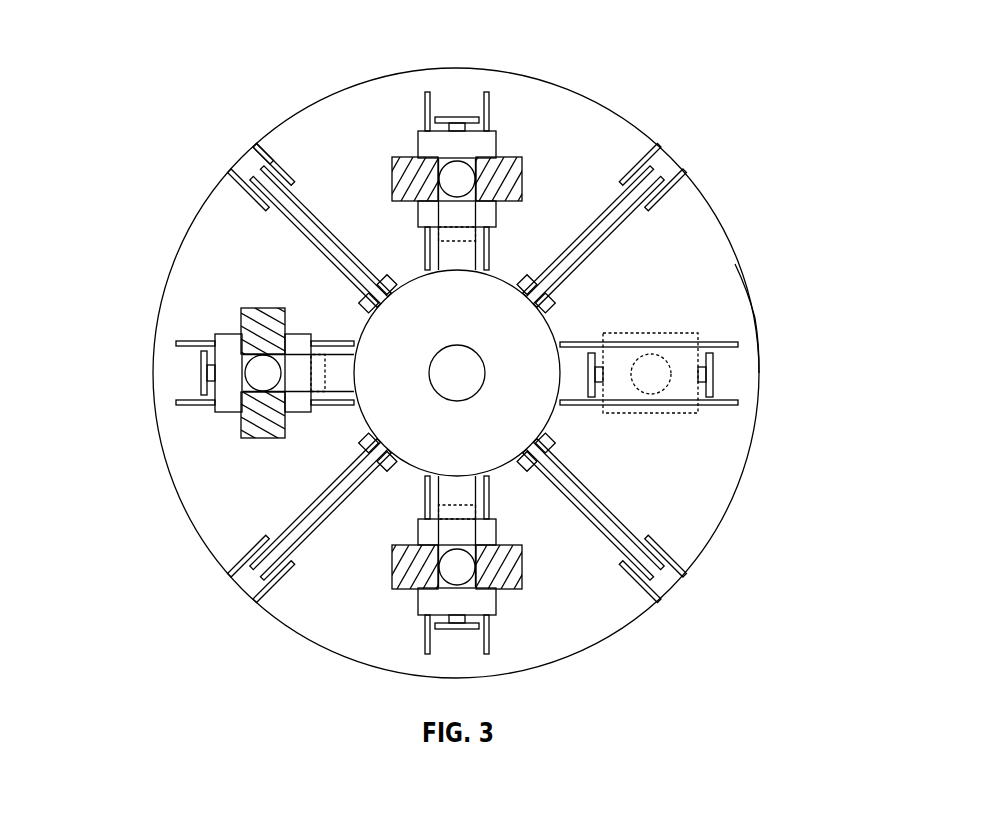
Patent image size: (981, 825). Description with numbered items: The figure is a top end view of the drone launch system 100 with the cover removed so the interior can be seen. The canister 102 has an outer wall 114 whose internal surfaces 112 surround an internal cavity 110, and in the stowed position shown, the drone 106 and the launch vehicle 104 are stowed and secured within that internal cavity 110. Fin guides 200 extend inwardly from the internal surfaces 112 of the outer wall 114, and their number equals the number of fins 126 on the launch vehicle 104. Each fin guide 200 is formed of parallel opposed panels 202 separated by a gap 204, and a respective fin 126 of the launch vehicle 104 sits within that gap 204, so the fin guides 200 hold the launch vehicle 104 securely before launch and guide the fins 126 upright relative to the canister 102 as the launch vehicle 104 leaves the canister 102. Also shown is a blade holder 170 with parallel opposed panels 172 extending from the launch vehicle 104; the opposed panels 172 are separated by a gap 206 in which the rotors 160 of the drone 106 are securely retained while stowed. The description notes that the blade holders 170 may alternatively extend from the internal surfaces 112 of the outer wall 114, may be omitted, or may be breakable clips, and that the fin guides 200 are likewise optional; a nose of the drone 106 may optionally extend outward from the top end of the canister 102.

The drone launch system 100 is at (180, 29).
The canister 102 is at (728, 238).
The launch vehicle 104 is at (580, 284).
The drone 106 is at (415, 303).
The internal cavity 110 is at (692, 223).
The internal surfaces 112 is at (747, 292).
The outer wall 114 is at (760, 338).
The fins 126 is at (308, 242).
The rotors 160 is at (593, 400).
The blade holder 170 is at (695, 397).
The opposed panels 172 is at (737, 346).
The fin guides 200 is at (409, 186).
The opposed panels 202 is at (287, 172).
The gap 204 is at (250, 168).
The gap 206 is at (735, 373).